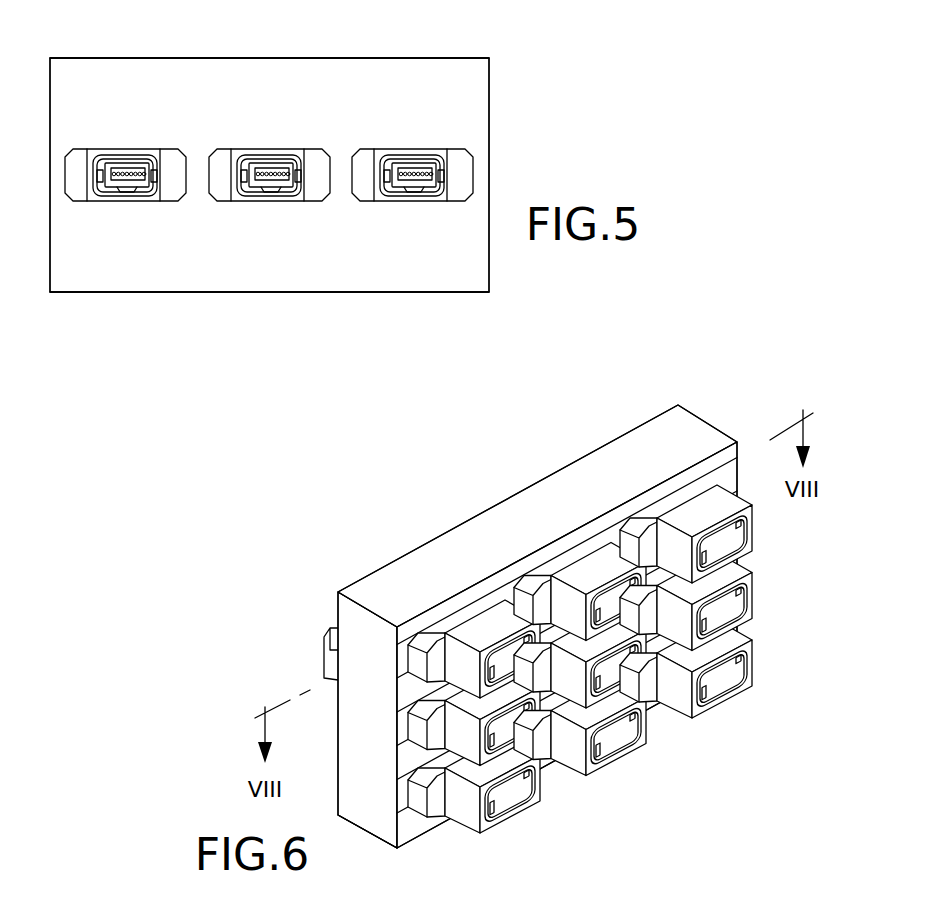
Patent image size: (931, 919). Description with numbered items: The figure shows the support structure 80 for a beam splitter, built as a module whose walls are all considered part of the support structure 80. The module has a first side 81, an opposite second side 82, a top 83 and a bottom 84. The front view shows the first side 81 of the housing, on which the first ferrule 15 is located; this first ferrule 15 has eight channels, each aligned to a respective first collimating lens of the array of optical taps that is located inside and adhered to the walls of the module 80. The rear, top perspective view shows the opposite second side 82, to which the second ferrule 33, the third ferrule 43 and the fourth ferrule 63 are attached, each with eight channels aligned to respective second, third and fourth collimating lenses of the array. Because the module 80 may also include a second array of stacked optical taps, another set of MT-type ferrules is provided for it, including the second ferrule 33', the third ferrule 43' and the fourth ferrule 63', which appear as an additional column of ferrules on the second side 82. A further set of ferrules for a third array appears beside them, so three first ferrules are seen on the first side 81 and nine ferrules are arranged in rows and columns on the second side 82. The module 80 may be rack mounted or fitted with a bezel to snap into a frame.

In FIG. 5, the support structure 80 is at (520, 56).
In FIG. 6, the support structure 80 is at (721, 382).
In FIG. 5, the first side 81 is at (362, 268).
In FIG. 6, the first side 81 is at (337, 719).
In FIG. 6, the second side 82 is at (413, 830).
In FIG. 5, the top 83 is at (358, 58).
In FIG. 6, the top 83 is at (517, 514).
In FIG. 5, the bottom 84 is at (220, 292).
In FIG. 6, the bottom 84 is at (362, 830).
In FIG. 5, the first ferrule 15 is at (98, 201).
In FIG. 6, the first ferrule 15 is at (328, 650).
In FIG. 6, the third ferrule 43 is at (473, 593).
In FIG. 6, the third ferrule 43' is at (580, 521).
In FIG. 6, the second ferrule 33 is at (418, 737).
In FIG. 6, the second ferrule 33' is at (616, 683).
In FIG. 6, the fourth ferrule 63 is at (474, 802).
In FIG. 6, the fourth ferrule 63' is at (596, 739).